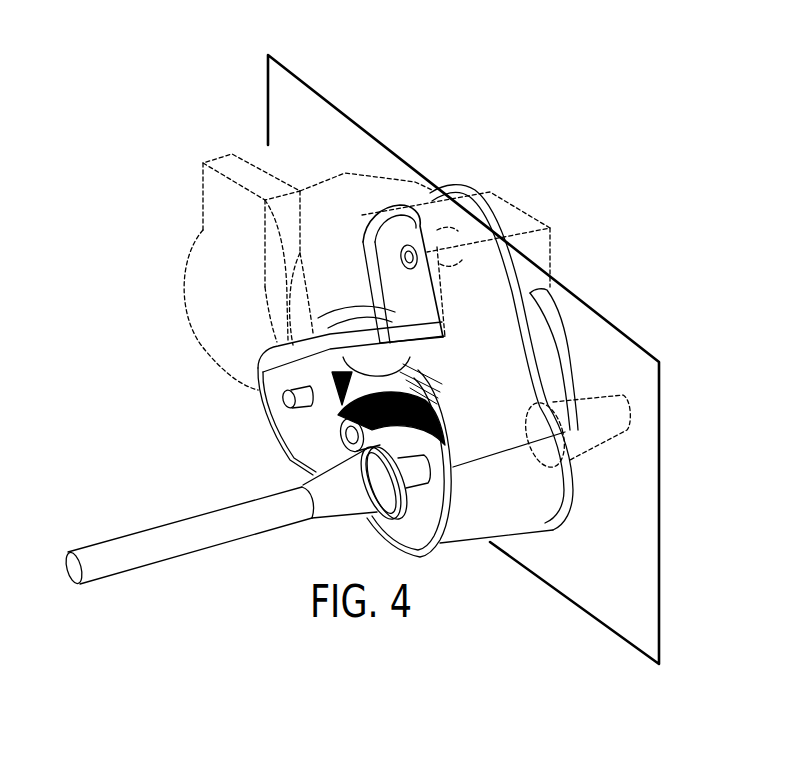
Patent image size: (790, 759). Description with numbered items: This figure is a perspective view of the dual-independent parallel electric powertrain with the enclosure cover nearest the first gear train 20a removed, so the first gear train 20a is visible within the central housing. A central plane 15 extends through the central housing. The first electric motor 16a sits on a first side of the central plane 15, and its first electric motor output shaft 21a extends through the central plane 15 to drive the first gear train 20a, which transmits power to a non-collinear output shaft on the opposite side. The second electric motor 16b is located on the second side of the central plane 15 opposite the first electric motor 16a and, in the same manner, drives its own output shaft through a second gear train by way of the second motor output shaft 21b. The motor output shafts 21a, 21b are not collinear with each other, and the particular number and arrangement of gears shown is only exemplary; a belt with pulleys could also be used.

The central plane 15 is at (345, 113).
The first electric motor 16a is at (517, 202).
The second electric motor 16b is at (205, 173).
The first gear train 20a is at (353, 408).
The first electric motor output shaft 21a is at (286, 403).
The second motor output shaft 21b is at (410, 252).